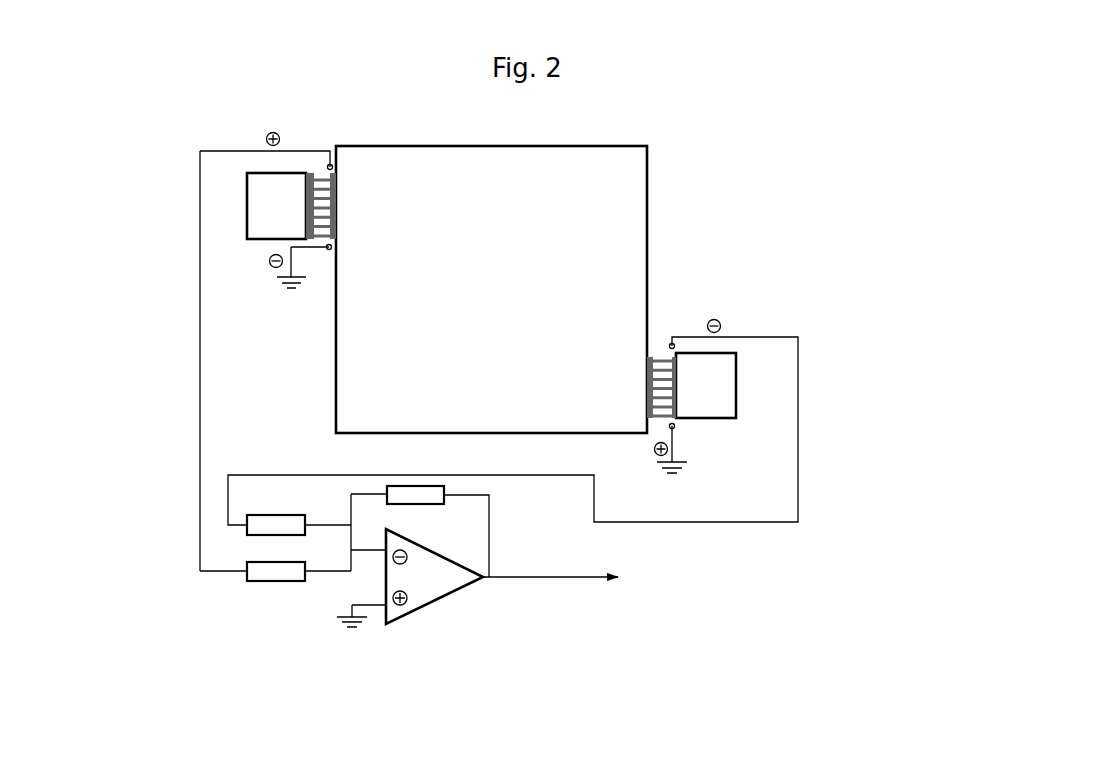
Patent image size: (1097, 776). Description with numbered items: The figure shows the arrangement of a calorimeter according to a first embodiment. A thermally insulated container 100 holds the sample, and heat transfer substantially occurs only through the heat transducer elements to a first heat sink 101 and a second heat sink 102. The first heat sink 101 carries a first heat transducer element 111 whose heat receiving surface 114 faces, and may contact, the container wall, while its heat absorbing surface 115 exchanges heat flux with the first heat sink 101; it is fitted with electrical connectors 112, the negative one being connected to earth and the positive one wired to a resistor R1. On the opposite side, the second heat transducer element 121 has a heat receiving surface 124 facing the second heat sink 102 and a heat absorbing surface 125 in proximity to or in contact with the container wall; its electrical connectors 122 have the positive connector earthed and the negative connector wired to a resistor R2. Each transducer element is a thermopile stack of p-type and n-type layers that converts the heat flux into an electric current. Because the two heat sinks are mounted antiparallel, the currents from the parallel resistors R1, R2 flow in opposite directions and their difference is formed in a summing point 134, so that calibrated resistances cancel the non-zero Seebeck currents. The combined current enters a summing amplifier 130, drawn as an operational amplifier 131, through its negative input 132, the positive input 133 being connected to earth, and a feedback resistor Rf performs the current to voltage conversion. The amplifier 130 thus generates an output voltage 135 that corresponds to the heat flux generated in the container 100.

The container 100 is at (593, 188).
The first heat sink 101 is at (273, 195).
The second heat sink 102 is at (722, 382).
The first heat transducer element 111 is at (280, 147).
The electrical connectors 112 is at (330, 165).
The heat receiving surface 114 is at (337, 182).
The heat absorbing surface 115 is at (305, 197).
The second heat transducer element 121 is at (681, 367).
The electrical connectors 122 is at (672, 348).
The heat receiving surface 124 is at (677, 403).
The heat absorbing surface 125 is at (653, 362).
The summing amplifier 130 is at (406, 583).
The operational amplifier 131 is at (434, 606).
The negative input 132 is at (383, 550).
The positive input 133 is at (387, 617).
The summing point 134 is at (350, 550).
The output voltage 135 is at (572, 576).
The resistor R1 is at (277, 577).
The resistor R2 is at (273, 525).
The resistor Rf is at (417, 495).